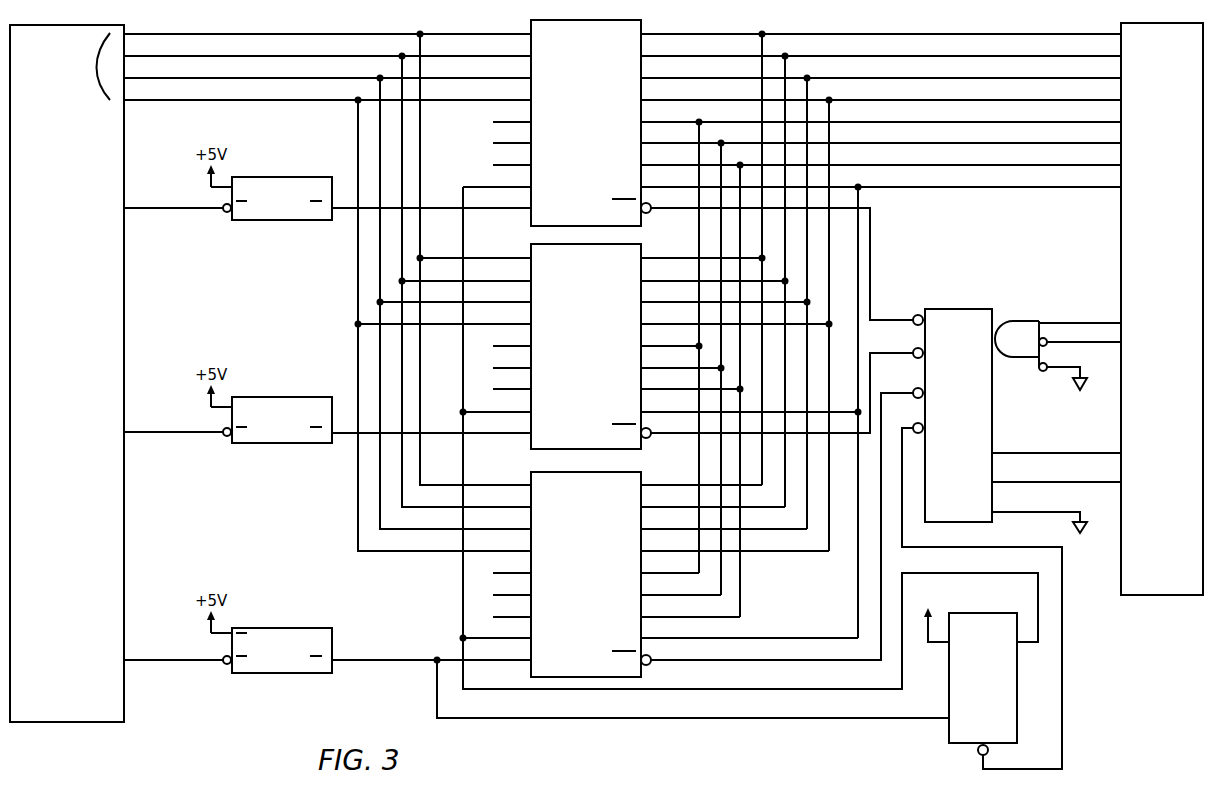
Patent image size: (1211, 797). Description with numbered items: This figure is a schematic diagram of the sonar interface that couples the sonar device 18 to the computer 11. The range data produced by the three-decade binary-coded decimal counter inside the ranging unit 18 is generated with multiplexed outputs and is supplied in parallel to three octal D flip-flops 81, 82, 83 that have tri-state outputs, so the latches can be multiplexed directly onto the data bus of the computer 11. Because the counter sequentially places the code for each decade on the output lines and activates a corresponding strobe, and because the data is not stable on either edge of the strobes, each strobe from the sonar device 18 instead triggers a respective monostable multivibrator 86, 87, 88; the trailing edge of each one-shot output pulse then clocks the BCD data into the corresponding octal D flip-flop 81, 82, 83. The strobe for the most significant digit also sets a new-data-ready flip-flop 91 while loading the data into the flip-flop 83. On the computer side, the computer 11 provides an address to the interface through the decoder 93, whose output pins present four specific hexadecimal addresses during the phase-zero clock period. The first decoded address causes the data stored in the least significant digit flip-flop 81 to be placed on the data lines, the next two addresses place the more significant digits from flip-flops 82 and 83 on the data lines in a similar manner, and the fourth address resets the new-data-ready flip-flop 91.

The computer 11 is at (1121, 424).
The sonar device 18 is at (122, 512).
The octal D flip-flop 81 is at (527, 225).
The octal D flip-flop 82 is at (641, 244).
The octal D flip-flop 83 is at (641, 472).
The monostable multivibrator 86 is at (289, 177).
The monostable multivibrator 87 is at (289, 397).
The monostable multivibrator 88 is at (281, 628).
The new data ready flip-flop 91 is at (983, 613).
The decoder 93 is at (956, 309).